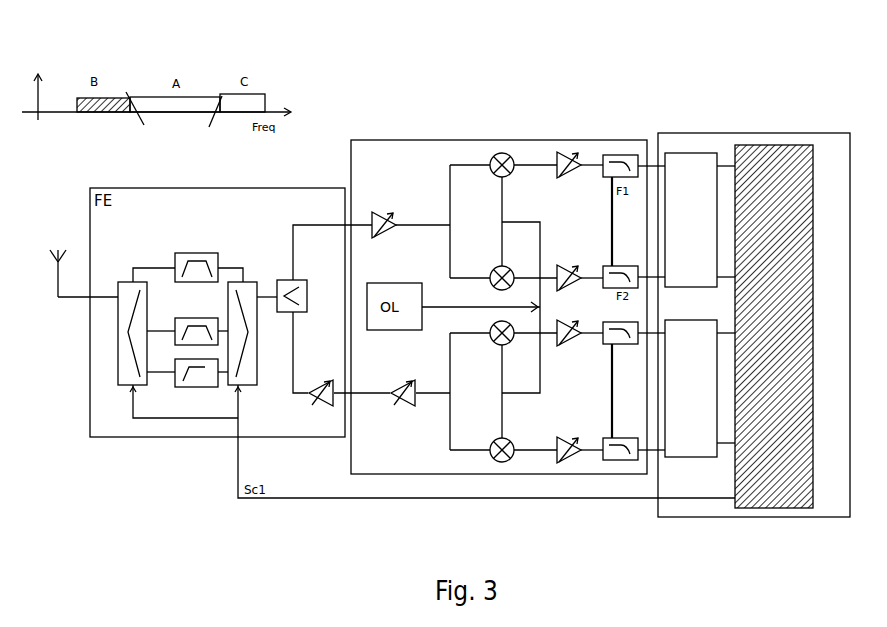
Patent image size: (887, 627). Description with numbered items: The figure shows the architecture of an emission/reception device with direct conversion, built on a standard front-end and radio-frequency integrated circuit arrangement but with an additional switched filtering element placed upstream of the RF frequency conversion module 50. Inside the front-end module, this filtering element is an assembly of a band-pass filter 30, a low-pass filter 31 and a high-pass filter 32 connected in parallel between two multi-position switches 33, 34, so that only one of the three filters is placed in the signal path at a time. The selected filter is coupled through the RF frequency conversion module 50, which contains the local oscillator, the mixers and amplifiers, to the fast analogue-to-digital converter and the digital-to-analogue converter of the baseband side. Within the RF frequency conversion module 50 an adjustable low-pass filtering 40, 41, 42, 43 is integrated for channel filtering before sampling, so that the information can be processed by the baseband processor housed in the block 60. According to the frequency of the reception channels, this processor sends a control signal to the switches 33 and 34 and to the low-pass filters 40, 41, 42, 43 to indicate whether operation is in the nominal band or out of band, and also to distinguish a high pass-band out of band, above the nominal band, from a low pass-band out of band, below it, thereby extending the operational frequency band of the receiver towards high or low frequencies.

The band-pass filter 30 is at (183, 253).
The low-pass filter 31 is at (178, 318).
The high-pass filter 32 is at (214, 387).
The switch 33 is at (132, 282).
The switch 34 is at (246, 282).
The adjustable low-pass filter 40 is at (605, 155).
The adjustable low-pass filter 41 is at (613, 258).
The adjustable low-pass filter 42 is at (628, 348).
The adjustable low-pass filter 43 is at (630, 470).
The RF frequency conversion module 50 is at (467, 140).
The baseband/digital block 60 is at (838, 150).